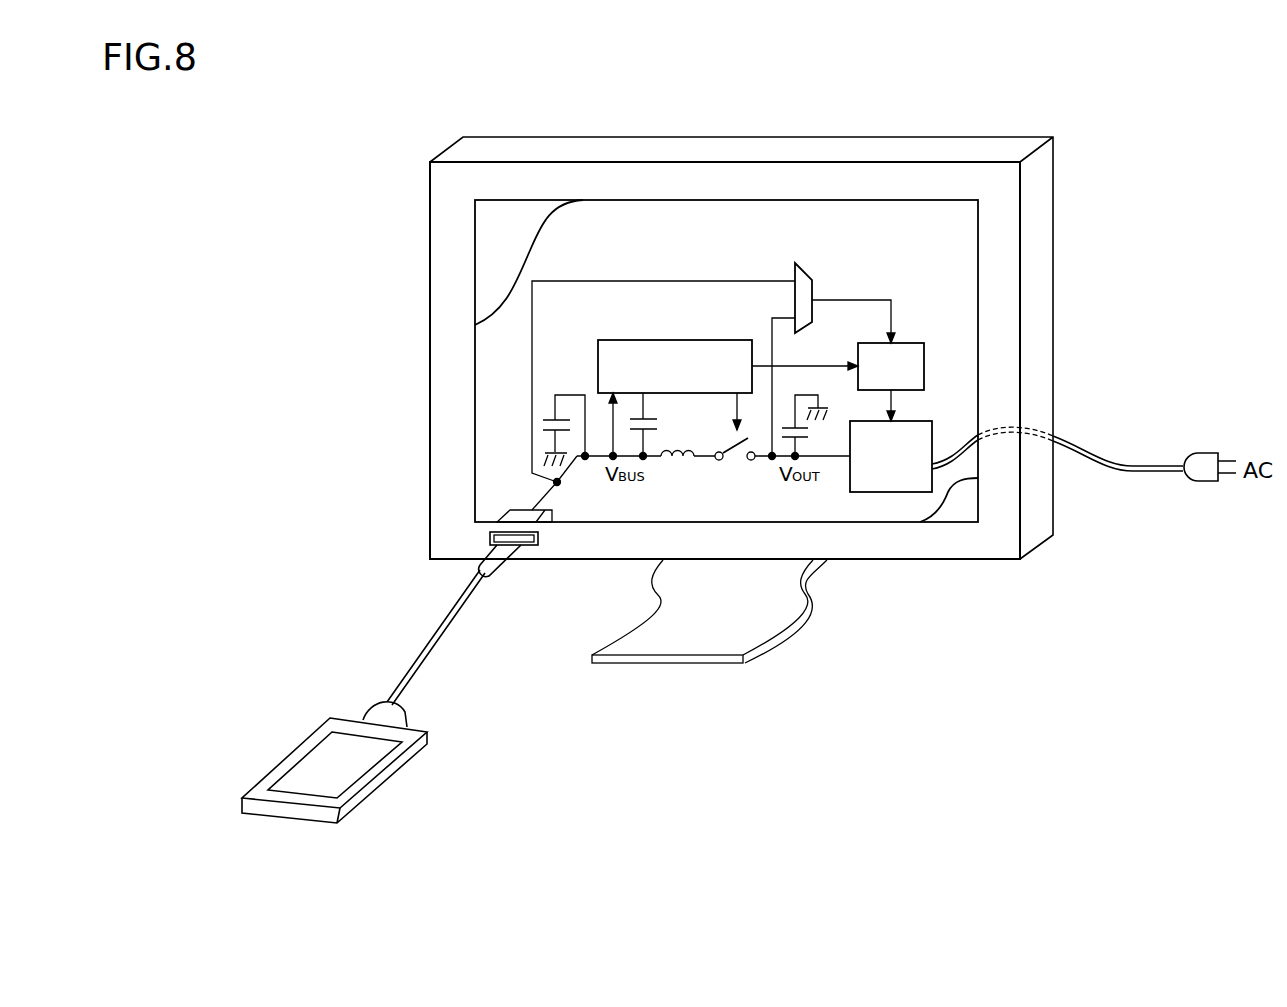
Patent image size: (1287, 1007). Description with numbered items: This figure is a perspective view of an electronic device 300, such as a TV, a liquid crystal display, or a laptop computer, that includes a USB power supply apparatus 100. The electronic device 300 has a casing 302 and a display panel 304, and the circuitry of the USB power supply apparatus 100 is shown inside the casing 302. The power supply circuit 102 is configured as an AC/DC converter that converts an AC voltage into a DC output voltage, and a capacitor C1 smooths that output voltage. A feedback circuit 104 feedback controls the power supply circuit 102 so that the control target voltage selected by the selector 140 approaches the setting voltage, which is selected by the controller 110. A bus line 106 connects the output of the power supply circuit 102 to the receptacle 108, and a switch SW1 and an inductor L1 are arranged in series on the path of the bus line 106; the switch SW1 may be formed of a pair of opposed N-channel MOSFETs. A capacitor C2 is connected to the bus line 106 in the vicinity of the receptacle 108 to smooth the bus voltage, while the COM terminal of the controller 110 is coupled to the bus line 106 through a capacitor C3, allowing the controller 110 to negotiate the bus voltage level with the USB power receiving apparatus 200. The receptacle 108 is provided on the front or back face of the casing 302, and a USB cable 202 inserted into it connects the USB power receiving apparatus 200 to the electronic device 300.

The USB power supply apparatus 100 is at (889, 260).
The power supply circuit 102 is at (913, 421).
The feedback circuit 104 is at (915, 343).
The bus line 106 is at (595, 462).
The receptacle 108 is at (520, 510).
The controller 110 is at (677, 340).
The selector 140 is at (820, 250).
The USB power receiving apparatus 200 is at (297, 813).
The USB cable 202 is at (445, 650).
The electronic device 300 is at (705, 785).
The casing 302 is at (612, 145).
The display panel 304 is at (493, 243).
The capacitor C1 is at (808, 433).
The capacitor C2 is at (545, 416).
The capacitor C3 is at (660, 424).
The inductor L1 is at (672, 463).
The switch SW1 is at (740, 463).